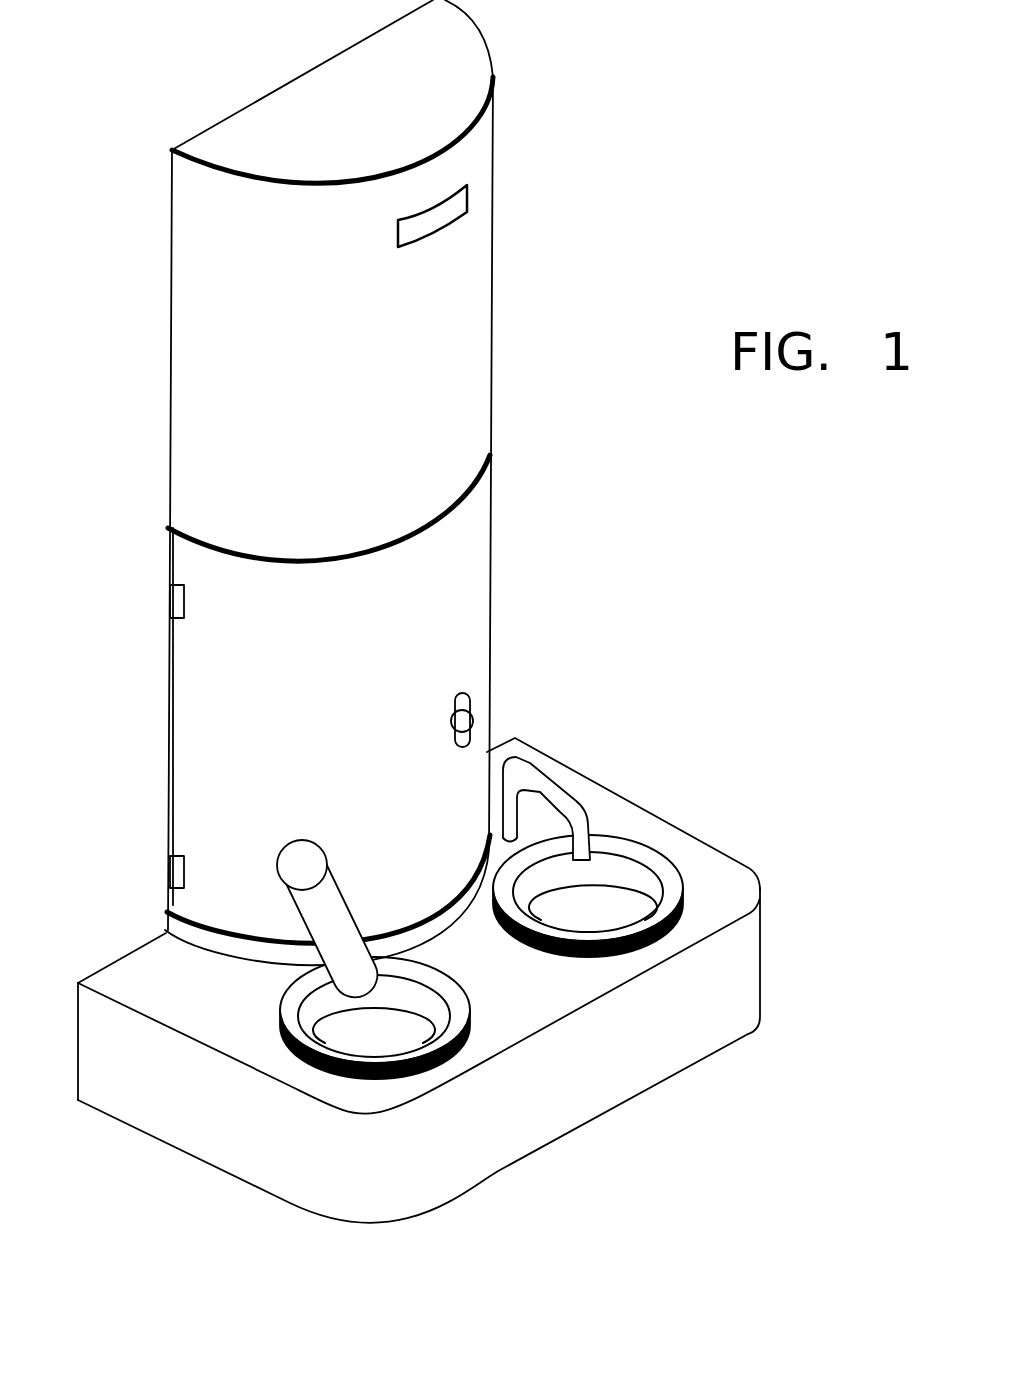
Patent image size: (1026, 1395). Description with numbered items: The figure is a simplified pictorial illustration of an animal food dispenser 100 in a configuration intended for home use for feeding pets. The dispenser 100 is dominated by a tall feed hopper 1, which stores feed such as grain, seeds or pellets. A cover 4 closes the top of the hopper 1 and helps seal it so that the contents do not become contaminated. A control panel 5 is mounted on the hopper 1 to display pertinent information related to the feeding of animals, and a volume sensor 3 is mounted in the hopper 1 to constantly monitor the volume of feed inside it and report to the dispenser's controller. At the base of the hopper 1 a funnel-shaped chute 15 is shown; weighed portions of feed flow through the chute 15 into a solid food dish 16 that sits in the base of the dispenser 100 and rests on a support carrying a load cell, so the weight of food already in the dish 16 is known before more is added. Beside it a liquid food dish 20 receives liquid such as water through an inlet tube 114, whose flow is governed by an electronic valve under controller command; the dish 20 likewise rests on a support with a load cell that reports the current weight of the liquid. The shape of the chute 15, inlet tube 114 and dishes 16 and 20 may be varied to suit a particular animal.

The animal food dispenser 100 is at (725, 253).
The feed hopper 1 is at (455, 360).
The volume sensor 3 is at (462, 718).
The cover 4 is at (248, 125).
The control panel 5 is at (442, 210).
The chute 15 is at (337, 907).
The solid food dish 16 is at (327, 1010).
The liquid food dish 20 is at (633, 878).
The inlet tube 114 is at (555, 790).